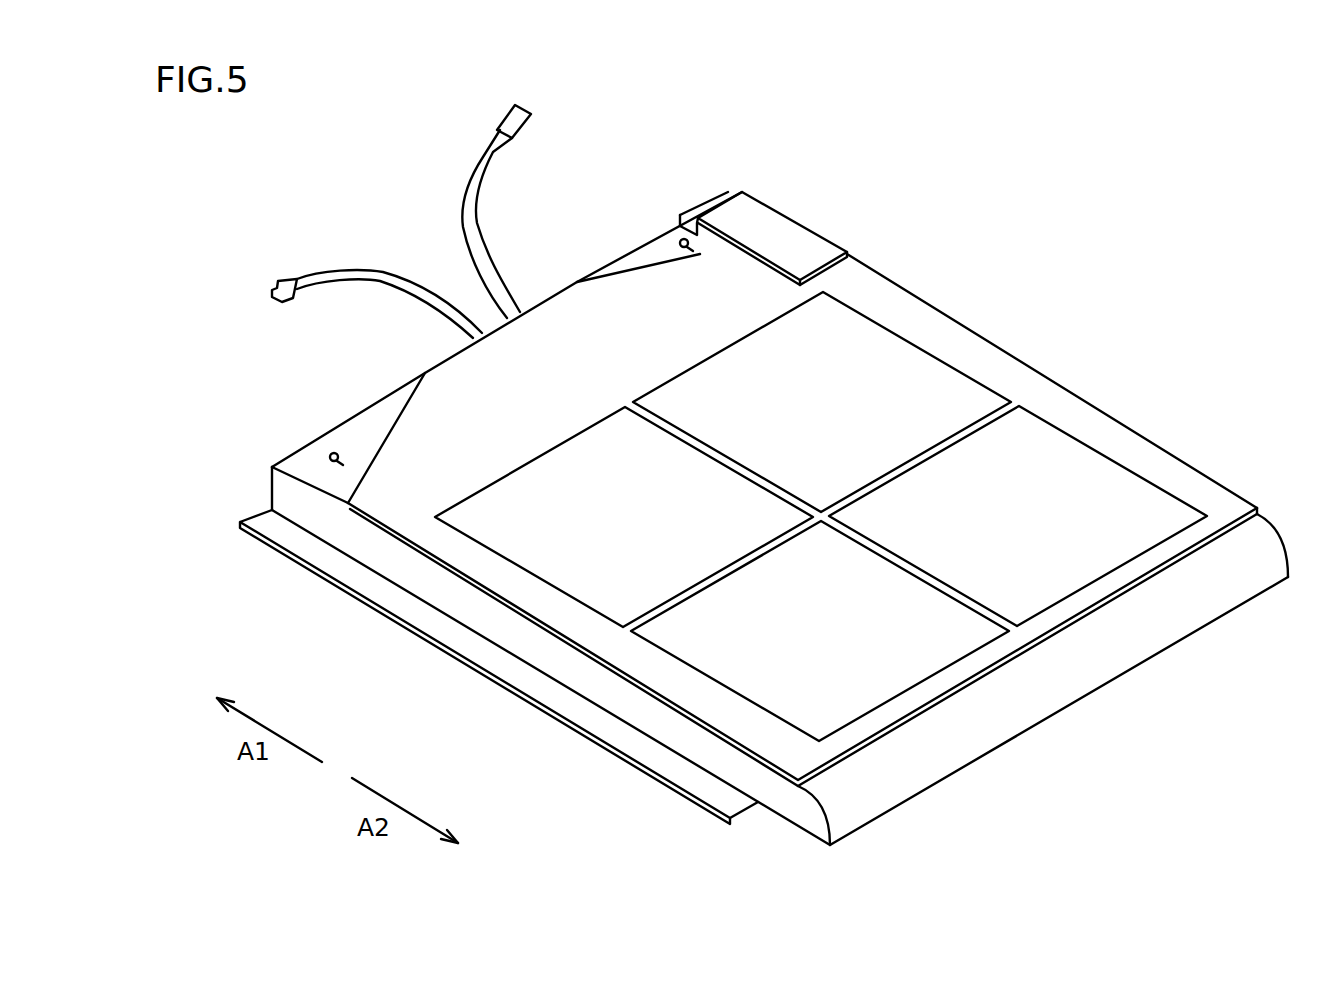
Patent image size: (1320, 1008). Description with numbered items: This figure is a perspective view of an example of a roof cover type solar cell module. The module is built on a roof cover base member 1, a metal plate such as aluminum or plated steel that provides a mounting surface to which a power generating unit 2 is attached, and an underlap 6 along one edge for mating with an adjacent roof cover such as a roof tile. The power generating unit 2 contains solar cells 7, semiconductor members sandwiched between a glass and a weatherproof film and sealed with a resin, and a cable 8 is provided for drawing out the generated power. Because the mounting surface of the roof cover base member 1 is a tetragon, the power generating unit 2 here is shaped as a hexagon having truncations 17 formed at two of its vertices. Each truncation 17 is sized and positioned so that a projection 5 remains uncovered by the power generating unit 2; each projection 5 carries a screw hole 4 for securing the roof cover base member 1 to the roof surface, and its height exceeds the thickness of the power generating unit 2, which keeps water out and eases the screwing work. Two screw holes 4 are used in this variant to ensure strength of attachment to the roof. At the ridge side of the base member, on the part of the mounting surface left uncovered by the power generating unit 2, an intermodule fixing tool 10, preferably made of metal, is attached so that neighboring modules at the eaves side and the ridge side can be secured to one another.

The roof cover base member 1 is at (368, 432).
The power generating unit 2 is at (950, 340).
The screw hole 4 is at (330, 453).
The projection 5 is at (330, 460).
The underlap 6 is at (597, 720).
The solar cell 7 is at (1045, 467).
The cable 8 is at (465, 193).
The intermodule fixing tool 10 is at (773, 232).
The truncation 17 is at (627, 270).